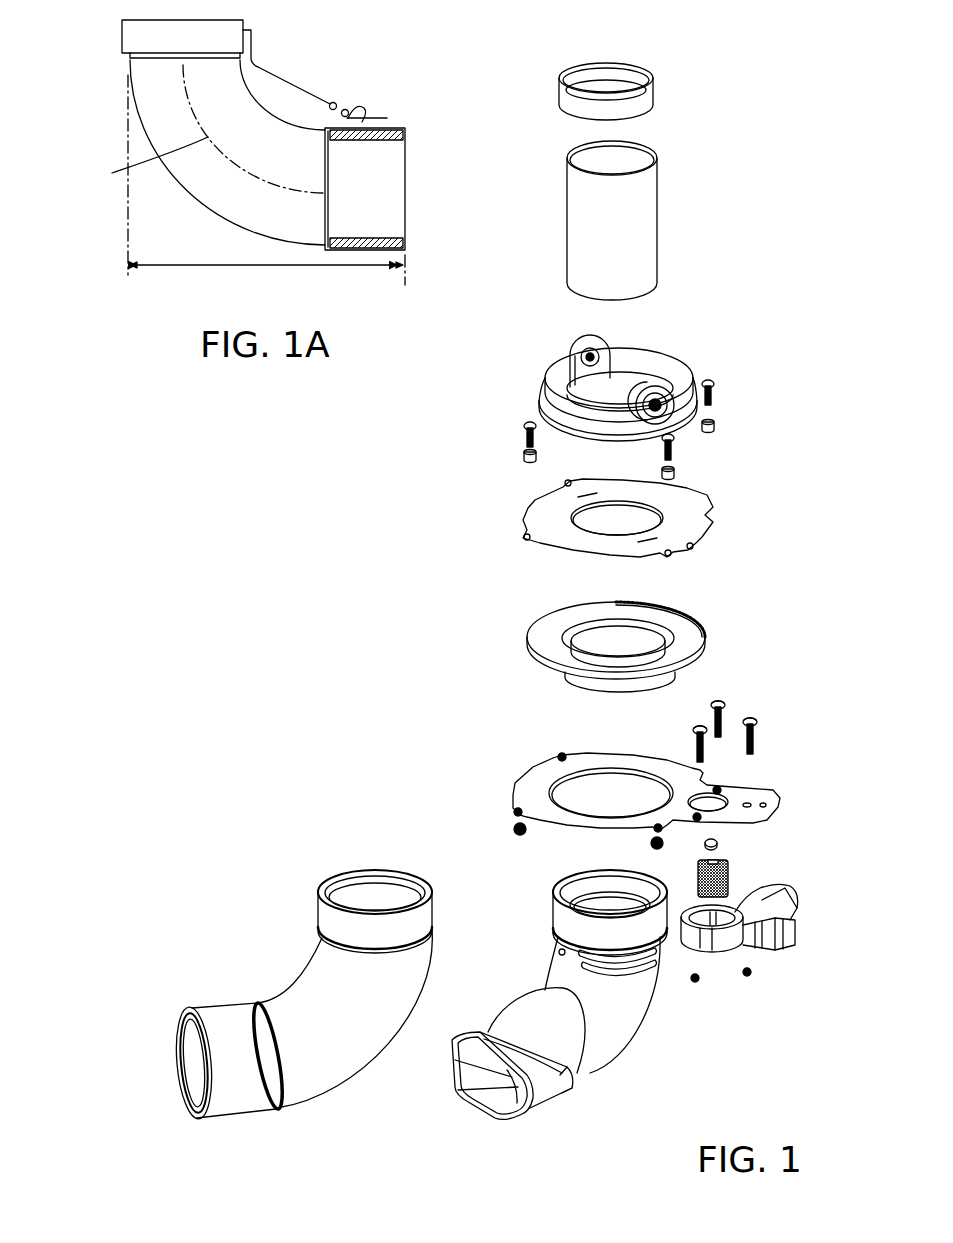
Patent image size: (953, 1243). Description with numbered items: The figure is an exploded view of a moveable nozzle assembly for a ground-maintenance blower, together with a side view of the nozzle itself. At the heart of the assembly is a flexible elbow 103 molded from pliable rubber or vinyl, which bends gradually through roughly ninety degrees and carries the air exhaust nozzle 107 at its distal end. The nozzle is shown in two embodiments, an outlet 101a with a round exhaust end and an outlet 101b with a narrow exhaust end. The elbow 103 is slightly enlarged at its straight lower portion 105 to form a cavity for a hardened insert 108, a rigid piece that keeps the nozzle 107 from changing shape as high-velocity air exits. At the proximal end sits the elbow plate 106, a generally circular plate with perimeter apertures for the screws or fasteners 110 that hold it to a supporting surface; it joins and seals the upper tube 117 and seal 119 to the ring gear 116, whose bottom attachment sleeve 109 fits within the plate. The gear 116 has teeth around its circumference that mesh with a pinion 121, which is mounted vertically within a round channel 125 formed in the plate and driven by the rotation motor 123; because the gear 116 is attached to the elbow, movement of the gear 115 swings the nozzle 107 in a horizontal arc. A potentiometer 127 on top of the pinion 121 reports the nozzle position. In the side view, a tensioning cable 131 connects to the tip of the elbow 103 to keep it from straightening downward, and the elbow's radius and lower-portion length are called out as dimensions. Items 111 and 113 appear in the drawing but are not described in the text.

In FIG. 1, the outlet 101a is at (192, 1127).
In FIG. 1, the outlet 101b is at (538, 1038).
In FIG. 1A, the flexible elbow 103 is at (197, 205).
In FIG. 1, the flexible elbow 103 is at (623, 1027).
In FIG. 1A, the lower portion 105 is at (388, 130).
In FIG. 1, the lower portion 105 is at (517, 1017).
In FIG. 1, the elbow plate 106 is at (532, 785).
In FIG. 1, the air exhaust nozzle 107 is at (433, 1145).
In FIG. 1, the hardened insert 108 is at (450, 1080).
In FIG. 1, the bottom attachment sleeve 109 is at (685, 648).
In FIG. 1, the fasteners 110 is at (758, 732).
In FIG. 1, the gasket 111 is at (687, 518).
In FIG. 1, the mounting flange with tab 113 is at (668, 368).
In FIG. 1, the gear 115 is at (718, 394).
In FIG. 1, the ring gear 116 is at (695, 622).
In FIG. 1, the upper tube 117 is at (653, 227).
In FIG. 1, the seal 119 is at (652, 98).
In FIG. 1, the pinion 121 is at (730, 874).
In FIG. 1, the rotation motor 123 is at (788, 918).
In FIG. 1, the channel 125 is at (737, 913).
In FIG. 1, the potentiometer 127 is at (718, 843).
In FIG. 1A, the tensioning cable 131 is at (298, 90).